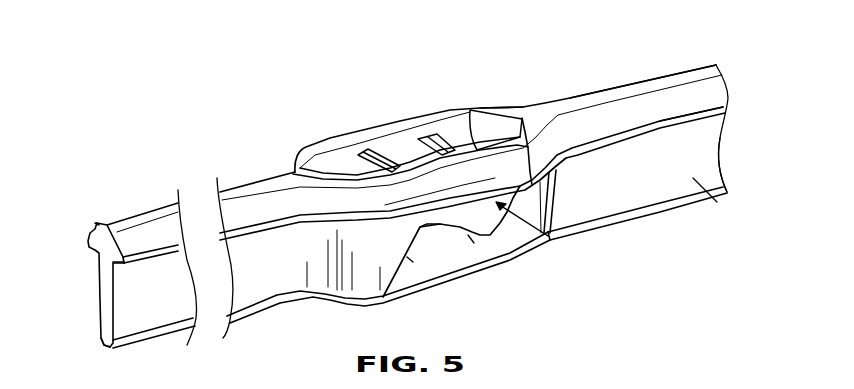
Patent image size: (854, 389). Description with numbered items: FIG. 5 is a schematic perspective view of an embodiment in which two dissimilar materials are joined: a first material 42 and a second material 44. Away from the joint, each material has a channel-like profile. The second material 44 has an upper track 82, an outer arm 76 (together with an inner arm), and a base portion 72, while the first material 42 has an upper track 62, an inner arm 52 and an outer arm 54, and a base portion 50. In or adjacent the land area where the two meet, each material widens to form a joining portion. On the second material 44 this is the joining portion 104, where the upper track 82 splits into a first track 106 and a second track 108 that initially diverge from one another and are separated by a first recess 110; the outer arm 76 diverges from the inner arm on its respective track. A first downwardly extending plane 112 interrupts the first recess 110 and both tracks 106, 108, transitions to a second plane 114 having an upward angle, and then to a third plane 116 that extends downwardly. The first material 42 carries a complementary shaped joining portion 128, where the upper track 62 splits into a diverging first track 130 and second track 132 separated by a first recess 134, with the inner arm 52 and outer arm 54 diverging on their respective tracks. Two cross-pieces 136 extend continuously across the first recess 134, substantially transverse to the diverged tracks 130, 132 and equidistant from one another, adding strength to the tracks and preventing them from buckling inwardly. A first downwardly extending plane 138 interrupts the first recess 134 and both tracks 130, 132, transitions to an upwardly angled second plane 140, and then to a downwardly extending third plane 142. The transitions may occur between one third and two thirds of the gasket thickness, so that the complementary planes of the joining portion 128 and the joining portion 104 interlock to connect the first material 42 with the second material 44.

The first material 42 is at (247, 186).
The second material 44 is at (727, 194).
The base portion 50 is at (98, 341).
The inner arm 52 is at (87, 243).
The outer arm 54 is at (136, 267).
The upper track 62 is at (97, 222).
The base portion 72 is at (662, 212).
The outer arm 76 is at (728, 108).
The upper track 82 is at (696, 70).
The joining portion 104 is at (527, 243).
The first track 106 is at (485, 108).
The second track 108 is at (531, 121).
The first recess 110 is at (497, 130).
The first downwardly extending plane 112 is at (498, 205).
The second plane 114 is at (468, 235).
The third plane 116 is at (407, 257).
The joining portion 128 is at (305, 303).
The first track 130 is at (303, 146).
The second track 132 is at (310, 176).
The first recess 134 is at (333, 162).
The cross-pieces 136 is at (365, 152).
The first downwardly extending plane 138 is at (550, 234).
The second plane 140 is at (440, 224).
The third plane 142 is at (420, 228).